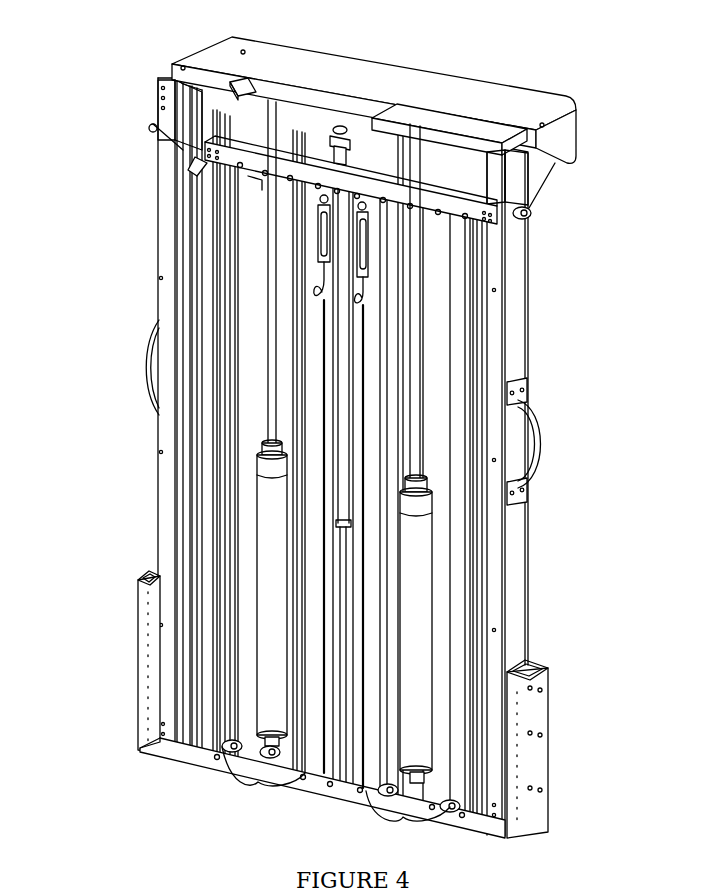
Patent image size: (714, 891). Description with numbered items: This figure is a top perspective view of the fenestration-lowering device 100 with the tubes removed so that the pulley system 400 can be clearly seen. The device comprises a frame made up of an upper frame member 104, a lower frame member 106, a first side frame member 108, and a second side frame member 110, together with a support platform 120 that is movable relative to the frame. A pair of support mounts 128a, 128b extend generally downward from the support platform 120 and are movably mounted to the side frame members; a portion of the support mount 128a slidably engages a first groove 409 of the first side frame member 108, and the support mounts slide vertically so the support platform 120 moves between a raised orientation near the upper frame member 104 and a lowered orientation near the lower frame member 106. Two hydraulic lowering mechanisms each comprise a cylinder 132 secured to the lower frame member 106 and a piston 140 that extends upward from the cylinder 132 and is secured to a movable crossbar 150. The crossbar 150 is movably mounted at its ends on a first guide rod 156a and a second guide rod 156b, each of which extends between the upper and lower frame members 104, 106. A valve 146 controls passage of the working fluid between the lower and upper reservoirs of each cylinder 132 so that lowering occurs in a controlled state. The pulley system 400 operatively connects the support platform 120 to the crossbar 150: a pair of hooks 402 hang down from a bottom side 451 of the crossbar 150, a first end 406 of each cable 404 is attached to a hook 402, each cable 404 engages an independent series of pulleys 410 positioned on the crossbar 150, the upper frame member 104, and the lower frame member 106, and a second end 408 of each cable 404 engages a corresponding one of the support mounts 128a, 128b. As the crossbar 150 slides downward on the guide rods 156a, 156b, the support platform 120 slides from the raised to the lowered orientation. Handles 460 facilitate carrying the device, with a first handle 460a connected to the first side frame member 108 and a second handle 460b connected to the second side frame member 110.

The fenestration-lowering device 100 is at (136, 66).
The upper frame member 104 is at (313, 127).
The lower frame member 106 is at (348, 792).
The first side frame member 108 is at (167, 488).
The second side frame member 110 is at (513, 582).
The support platform 120 is at (408, 100).
The first support mount 128a is at (214, 120).
The second support mount 128b is at (538, 160).
The cylinder 132 is at (272, 650).
The piston 140 is at (268, 410).
The valve 146 is at (343, 140).
The crossbar 150 is at (403, 200).
The first guide rod 156a is at (225, 257).
The second guide rod 156b is at (478, 278).
The pulley system 400 is at (466, 357).
The hook 402 is at (307, 233).
The cable 404 is at (325, 630).
The first end of cable 406 is at (307, 305).
The second end of cable 408 is at (182, 147).
The first groove 409 is at (210, 291).
The pulleys 410 is at (257, 784).
The bottom side of crossbar 451 is at (195, 165).
The handle 460 is at (134, 387).
The first handle 460a is at (150, 352).
The second handle 460b is at (530, 413).